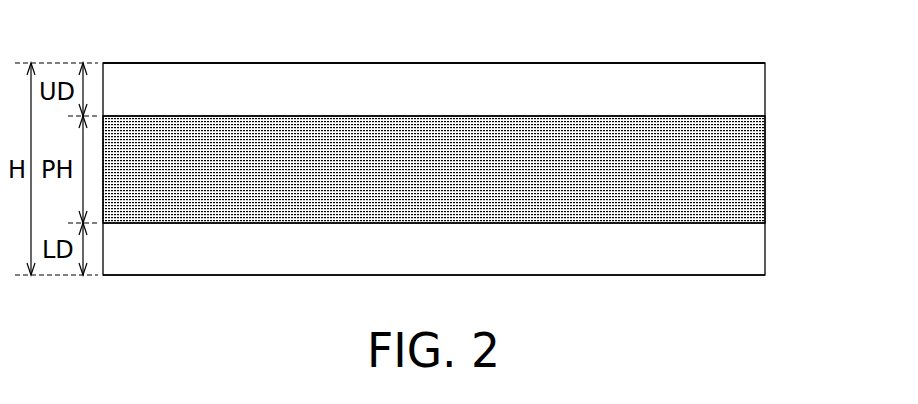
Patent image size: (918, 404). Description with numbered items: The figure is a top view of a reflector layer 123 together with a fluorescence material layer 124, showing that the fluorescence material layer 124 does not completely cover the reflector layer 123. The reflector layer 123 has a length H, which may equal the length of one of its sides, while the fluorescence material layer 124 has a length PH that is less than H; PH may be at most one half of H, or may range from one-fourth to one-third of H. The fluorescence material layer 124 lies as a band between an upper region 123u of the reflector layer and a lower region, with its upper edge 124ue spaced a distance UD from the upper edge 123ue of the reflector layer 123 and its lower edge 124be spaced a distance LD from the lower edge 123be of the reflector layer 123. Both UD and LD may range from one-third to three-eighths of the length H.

The reflector layer 123 is at (747, 88).
The fluorescence material layer 124 is at (747, 172).
The upper edge of the reflector layer 123ue is at (352, 62).
The upper edge of the fluorescence material layer 124ue is at (530, 115).
The upper portion of layer 123 123u is at (650, 88).
The lower edge of the fluorescence material layer 124be is at (718, 224).
The lower edge of the reflector layer 123be is at (660, 276).